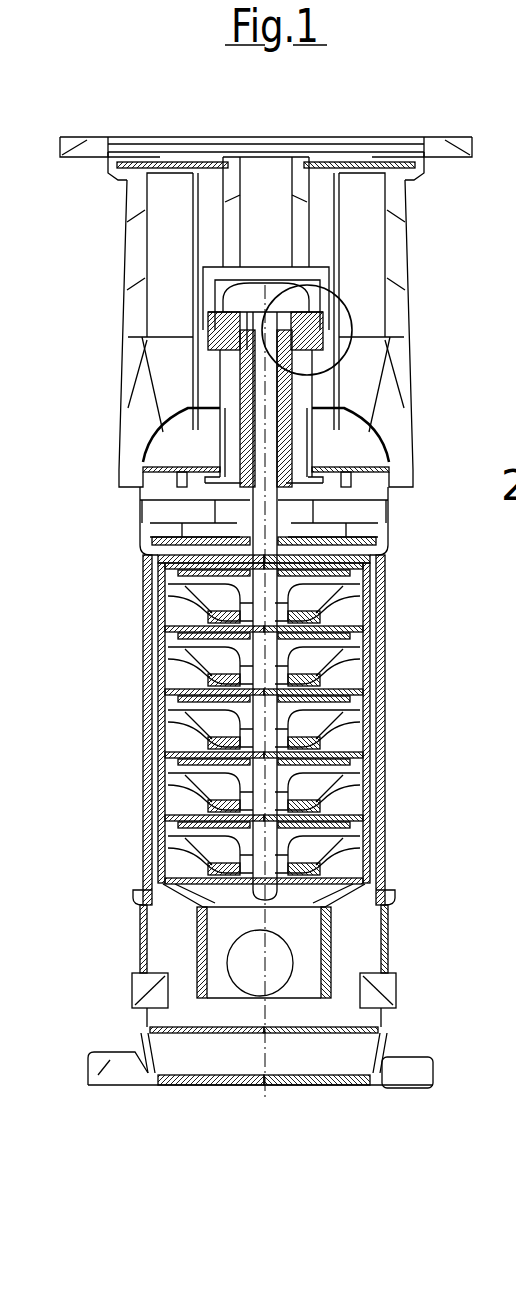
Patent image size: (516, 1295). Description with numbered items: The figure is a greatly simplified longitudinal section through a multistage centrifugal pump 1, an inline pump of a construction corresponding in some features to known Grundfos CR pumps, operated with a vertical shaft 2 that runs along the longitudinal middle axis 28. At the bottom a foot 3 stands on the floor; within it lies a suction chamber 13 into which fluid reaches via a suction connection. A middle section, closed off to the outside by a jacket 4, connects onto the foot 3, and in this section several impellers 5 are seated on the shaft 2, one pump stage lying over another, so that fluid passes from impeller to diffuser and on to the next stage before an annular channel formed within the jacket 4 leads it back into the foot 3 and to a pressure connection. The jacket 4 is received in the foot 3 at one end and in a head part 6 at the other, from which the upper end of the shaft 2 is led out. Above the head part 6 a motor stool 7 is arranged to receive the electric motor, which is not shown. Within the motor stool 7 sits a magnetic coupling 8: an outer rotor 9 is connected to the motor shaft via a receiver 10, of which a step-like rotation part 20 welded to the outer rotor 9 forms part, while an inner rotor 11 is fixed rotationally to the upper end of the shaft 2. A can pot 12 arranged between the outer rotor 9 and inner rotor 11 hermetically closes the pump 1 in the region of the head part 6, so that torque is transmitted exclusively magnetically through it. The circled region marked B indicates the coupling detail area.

The multistage centrifugal pump 1 is at (288, 620).
The shaft 2 is at (365, 682).
The foot 3 is at (378, 1010).
The jacket 4 is at (380, 735).
The impellers 5 is at (370, 792).
The head part 6 is at (378, 510).
The motor stool 7 is at (395, 368).
The magnetic coupling 8 is at (355, 293).
The outer rotor 9 is at (338, 323).
The receiver 10 is at (246, 229).
The inner rotor 11 is at (325, 372).
The can pot 12 is at (313, 443).
The suction chamber 13 is at (260, 963).
The rotation part 20 is at (320, 277).
The longitudinal middle axis 28 is at (262, 1092).
The detail region B is at (264, 362).